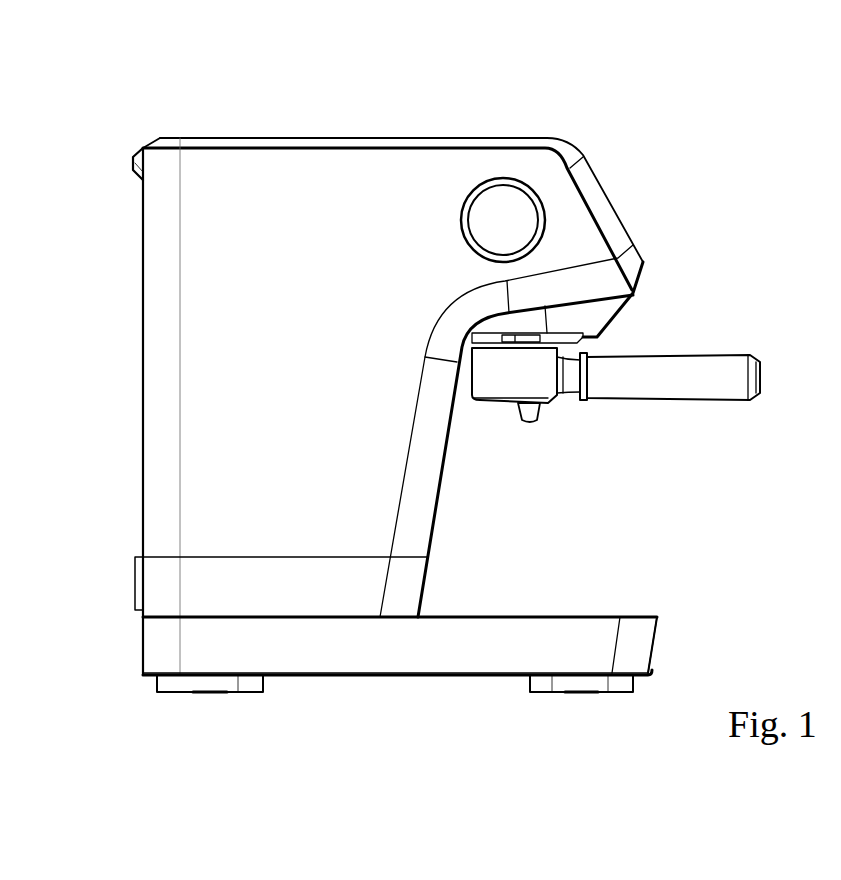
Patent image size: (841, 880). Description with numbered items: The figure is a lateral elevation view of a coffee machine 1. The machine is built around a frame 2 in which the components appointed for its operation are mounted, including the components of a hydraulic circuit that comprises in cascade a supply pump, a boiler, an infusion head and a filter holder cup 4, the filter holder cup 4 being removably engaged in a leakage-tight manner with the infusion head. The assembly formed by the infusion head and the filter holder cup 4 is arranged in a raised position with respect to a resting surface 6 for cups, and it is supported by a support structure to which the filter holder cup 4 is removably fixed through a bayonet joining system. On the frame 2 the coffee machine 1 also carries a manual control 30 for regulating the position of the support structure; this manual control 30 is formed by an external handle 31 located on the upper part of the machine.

The coffee machine 1 is at (460, 358).
The frame 2 is at (395, 415).
The manual control 30 is at (515, 228).
The external handle 31 is at (510, 208).
The filter holder cup 4 is at (528, 422).
The resting surface 6 is at (532, 616).